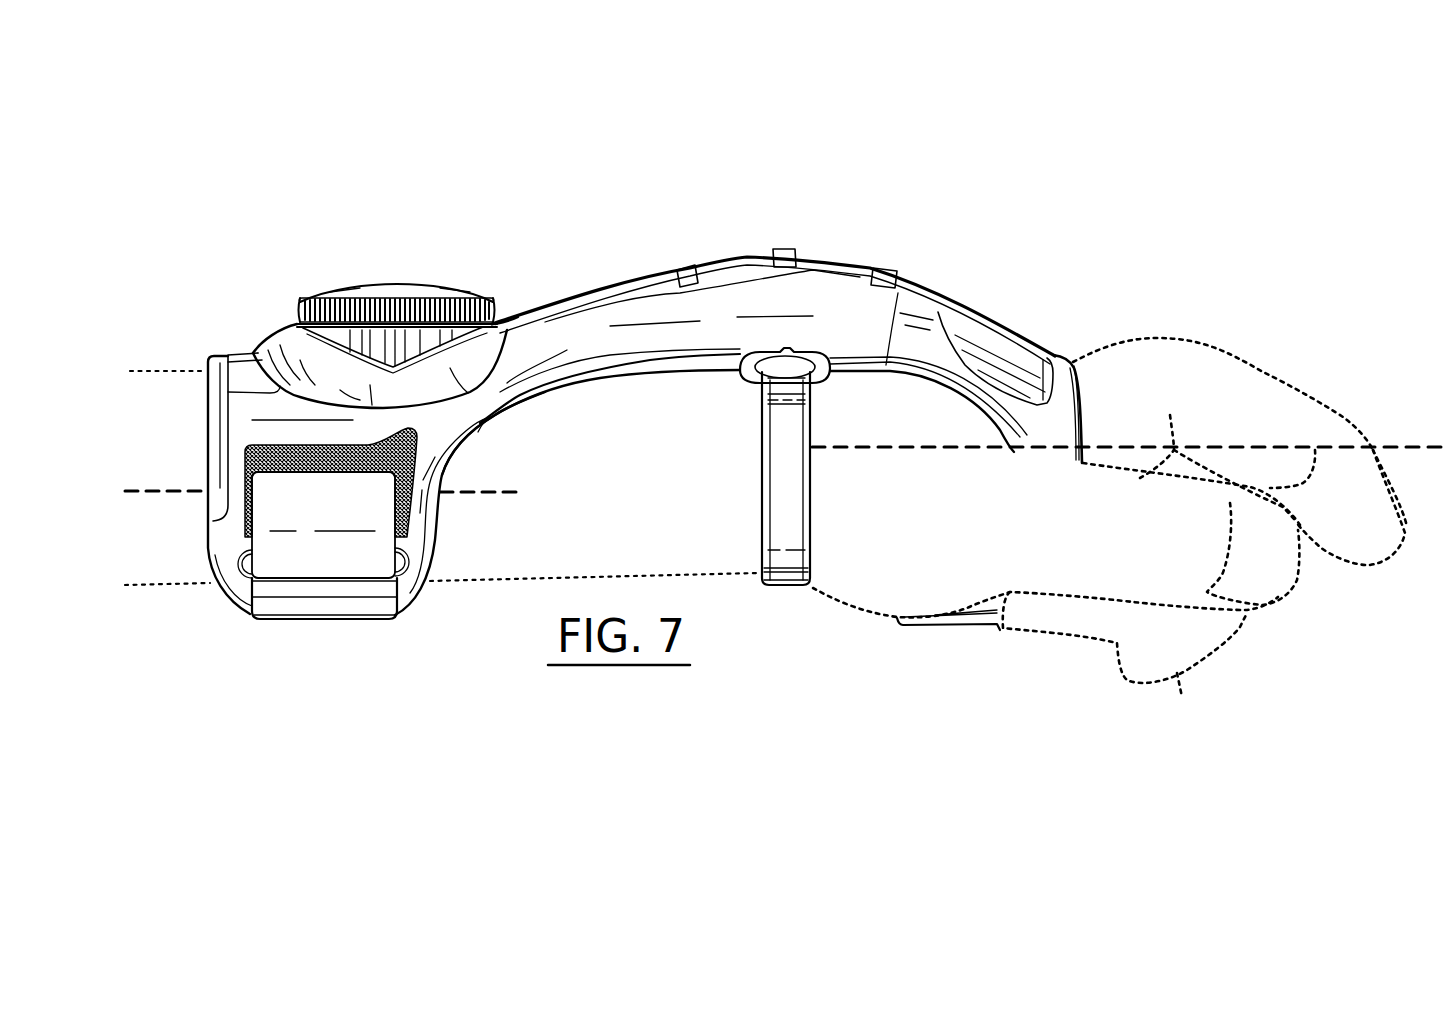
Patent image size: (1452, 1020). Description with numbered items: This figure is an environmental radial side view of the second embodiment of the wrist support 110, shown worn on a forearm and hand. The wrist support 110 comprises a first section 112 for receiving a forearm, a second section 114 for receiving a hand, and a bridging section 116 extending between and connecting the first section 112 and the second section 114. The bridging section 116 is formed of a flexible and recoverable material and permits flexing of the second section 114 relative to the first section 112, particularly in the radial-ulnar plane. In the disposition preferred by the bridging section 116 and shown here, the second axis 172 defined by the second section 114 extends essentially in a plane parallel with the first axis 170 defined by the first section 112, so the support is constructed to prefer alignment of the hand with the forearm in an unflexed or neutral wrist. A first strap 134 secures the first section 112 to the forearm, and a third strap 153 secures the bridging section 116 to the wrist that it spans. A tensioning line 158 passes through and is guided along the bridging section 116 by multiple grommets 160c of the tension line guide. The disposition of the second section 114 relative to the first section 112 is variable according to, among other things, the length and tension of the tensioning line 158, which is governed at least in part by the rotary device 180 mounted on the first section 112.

The wrist support 110 is at (907, 115).
The first section 112 is at (232, 354).
The second section 114 is at (1053, 363).
The bridging section 116 is at (688, 335).
The first strap 134 is at (320, 600).
The third strap 153 is at (773, 462).
The tensioning line 158 is at (600, 295).
The grommets 160c is at (683, 266).
The first axis 170 is at (479, 496).
The second axis 172 is at (1418, 447).
The rotary device 180 is at (405, 283).